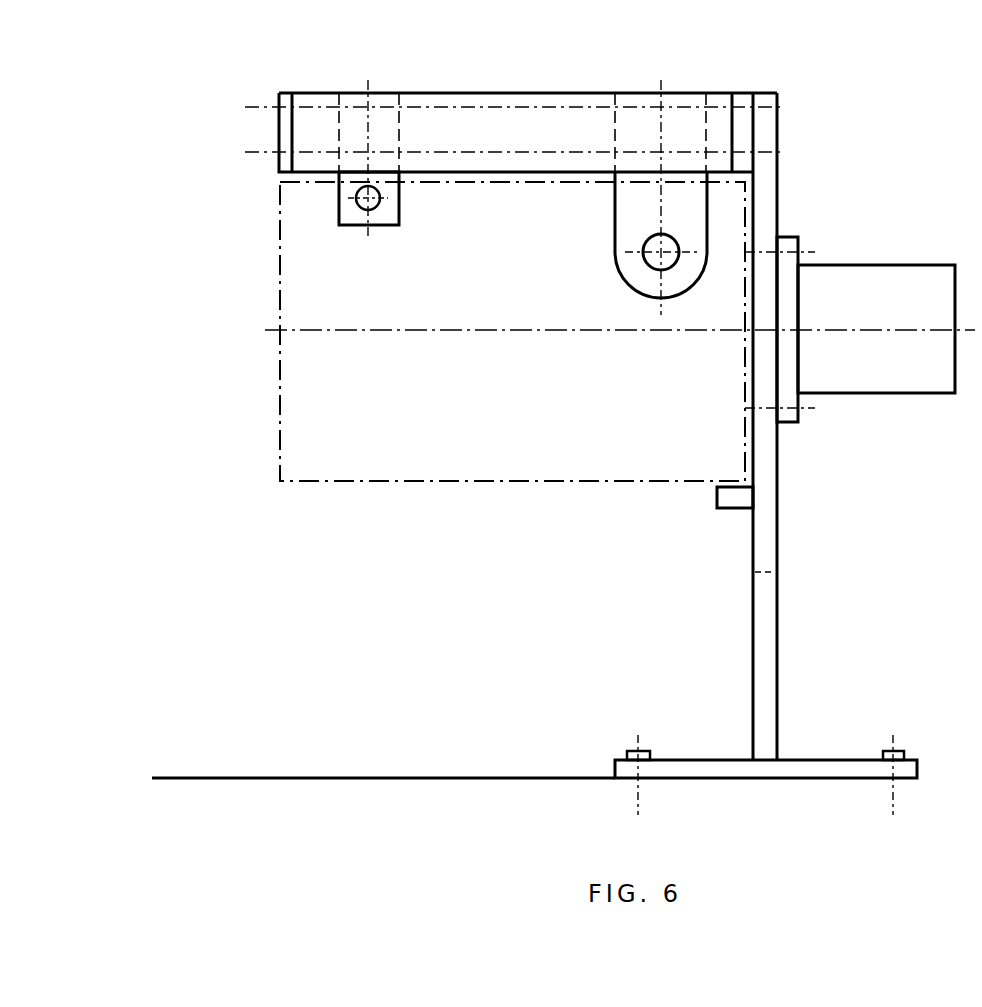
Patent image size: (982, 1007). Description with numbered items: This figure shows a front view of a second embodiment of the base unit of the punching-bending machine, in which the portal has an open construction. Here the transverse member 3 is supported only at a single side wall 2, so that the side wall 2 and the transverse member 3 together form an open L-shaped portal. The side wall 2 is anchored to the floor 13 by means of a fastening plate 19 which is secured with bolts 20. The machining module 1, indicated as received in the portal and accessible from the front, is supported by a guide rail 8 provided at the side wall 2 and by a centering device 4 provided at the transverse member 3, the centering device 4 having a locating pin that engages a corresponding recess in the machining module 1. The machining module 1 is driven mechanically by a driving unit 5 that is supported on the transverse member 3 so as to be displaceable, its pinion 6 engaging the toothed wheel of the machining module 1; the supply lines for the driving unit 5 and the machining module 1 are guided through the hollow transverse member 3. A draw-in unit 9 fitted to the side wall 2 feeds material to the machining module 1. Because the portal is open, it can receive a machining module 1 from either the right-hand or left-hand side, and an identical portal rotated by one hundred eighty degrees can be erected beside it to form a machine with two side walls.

The machining module 1 is at (475, 447).
The side wall 2 is at (767, 597).
The transverse member 3 is at (492, 132).
The centering device 4 is at (373, 205).
The driving unit 5 is at (630, 228).
The pinion 6 is at (653, 260).
The guide rail 8 is at (735, 498).
The draw-in unit 9 is at (872, 293).
The floor 13 is at (200, 780).
The fastening plate 19 is at (812, 768).
The bolts 20 is at (633, 750).